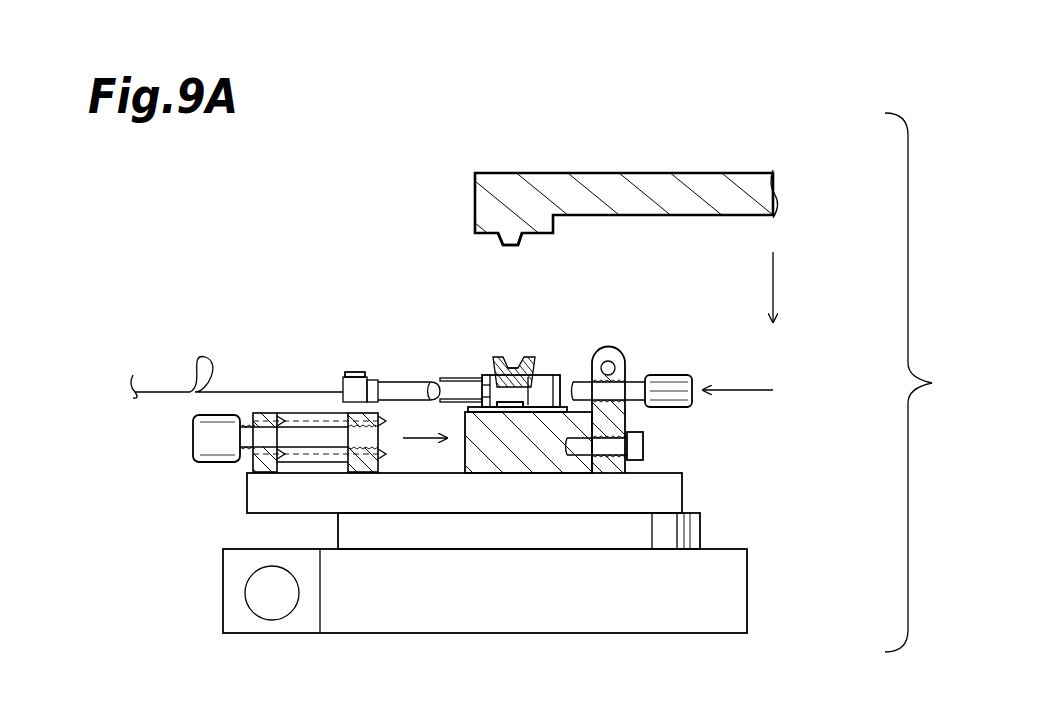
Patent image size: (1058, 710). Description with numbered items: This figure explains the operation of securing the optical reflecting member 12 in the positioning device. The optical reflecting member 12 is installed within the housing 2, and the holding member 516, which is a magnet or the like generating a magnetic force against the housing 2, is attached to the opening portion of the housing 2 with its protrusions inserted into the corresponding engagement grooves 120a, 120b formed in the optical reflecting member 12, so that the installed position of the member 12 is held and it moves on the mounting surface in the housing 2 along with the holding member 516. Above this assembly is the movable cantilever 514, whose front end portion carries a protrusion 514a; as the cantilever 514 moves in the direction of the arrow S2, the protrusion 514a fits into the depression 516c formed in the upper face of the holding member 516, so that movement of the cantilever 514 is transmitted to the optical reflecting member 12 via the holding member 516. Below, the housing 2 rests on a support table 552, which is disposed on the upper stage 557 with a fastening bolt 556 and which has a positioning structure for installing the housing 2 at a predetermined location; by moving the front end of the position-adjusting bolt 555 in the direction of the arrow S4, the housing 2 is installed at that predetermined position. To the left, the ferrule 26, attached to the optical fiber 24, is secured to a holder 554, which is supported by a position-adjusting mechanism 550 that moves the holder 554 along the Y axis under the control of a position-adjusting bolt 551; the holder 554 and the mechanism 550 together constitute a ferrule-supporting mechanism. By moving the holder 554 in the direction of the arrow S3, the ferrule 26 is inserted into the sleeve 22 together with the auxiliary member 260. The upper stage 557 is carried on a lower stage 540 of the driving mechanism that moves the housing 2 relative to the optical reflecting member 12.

The cantilever 514 is at (649, 178).
The protrusion 514a is at (500, 242).
The arrow S2 is at (776, 283).
The optical fiber 24 is at (168, 390).
The ferrule 26 is at (343, 383).
The holder 554 is at (357, 375).
The auxiliary member 260 is at (406, 382).
The sleeve 22 is at (458, 378).
The housing 2 is at (542, 352).
The optical reflecting member 12 is at (548, 375).
The holding member 516 is at (498, 357).
The depression 516c is at (520, 365).
The support table 552 is at (582, 420).
The position-adjusting bolt 555 is at (670, 380).
The arrow S4 is at (753, 390).
The fastening bolt 556 is at (640, 446).
The position-adjusting mechanism 550 is at (293, 412).
The position-adjusting bolt 551 is at (208, 455).
The arrow S3 is at (425, 440).
The upper stage 557 is at (680, 490).
The stage 540 is at (700, 532).
The engagement groove 120a is at (520, 365).
The engagement groove 120b is at (510, 404).